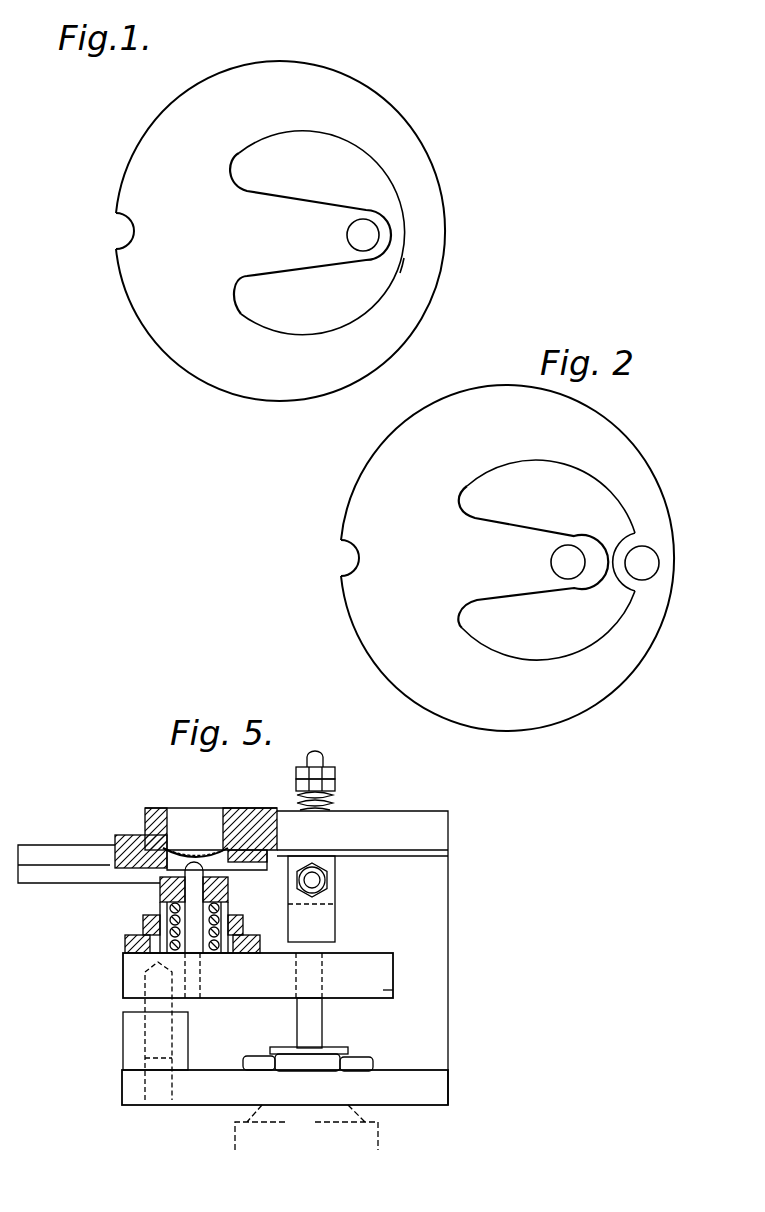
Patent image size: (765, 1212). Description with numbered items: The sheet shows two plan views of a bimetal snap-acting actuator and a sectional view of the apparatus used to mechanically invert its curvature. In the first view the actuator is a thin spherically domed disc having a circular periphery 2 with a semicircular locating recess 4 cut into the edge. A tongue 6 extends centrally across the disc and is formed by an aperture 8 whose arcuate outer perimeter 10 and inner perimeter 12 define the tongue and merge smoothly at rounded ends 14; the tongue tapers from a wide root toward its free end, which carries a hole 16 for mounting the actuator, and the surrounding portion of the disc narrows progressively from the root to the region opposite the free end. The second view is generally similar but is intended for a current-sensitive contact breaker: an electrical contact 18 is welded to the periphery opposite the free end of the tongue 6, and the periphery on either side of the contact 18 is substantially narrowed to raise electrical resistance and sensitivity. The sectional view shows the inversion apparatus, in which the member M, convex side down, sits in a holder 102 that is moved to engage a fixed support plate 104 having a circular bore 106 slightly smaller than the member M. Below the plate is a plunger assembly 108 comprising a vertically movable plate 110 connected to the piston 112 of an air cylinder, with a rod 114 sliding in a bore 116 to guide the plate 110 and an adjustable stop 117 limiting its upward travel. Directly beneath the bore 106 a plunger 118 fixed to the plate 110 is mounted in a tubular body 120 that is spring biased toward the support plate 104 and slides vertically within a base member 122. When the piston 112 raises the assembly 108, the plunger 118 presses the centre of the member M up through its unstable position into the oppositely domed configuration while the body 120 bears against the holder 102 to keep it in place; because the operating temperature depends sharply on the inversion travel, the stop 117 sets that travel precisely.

In FIG. 1, the circular periphery 2 is at (430, 310).
In FIG. 2, the circular periphery 2 is at (370, 457).
In FIG. 1, the locating recess 4 is at (117, 224).
In FIG. 2, the locating recess 4 is at (343, 548).
In FIG. 1, the tongue 6 is at (267, 203).
In FIG. 2, the tongue 6 is at (480, 548).
In FIG. 1, the aperture 8 is at (382, 173).
In FIG. 2, the aperture 8 is at (603, 500).
In FIG. 1, the arcuate outer perimeter 10 is at (400, 273).
In FIG. 2, the arcuate outer perimeter 10 is at (600, 473).
In FIG. 1, the inner perimeter 12 is at (325, 203).
In FIG. 2, the inner perimeter 12 is at (533, 523).
In FIG. 1, the rounded ends 14 is at (232, 172).
In FIG. 2, the rounded ends 14 is at (467, 492).
In FIG. 1, the hole 16 is at (370, 240).
In FIG. 2, the hole 16 is at (570, 572).
In FIG. 2, the electrical contact 18 is at (637, 572).
In FIG. 5, the holder 102 is at (125, 833).
In FIG. 5, the support plate 104 is at (353, 822).
In FIG. 5, the circular bore 106 is at (202, 820).
In FIG. 5, the plunger assembly 108 is at (398, 985).
In FIG. 5, the plate 110 is at (383, 990).
In FIG. 5, the piston 112 is at (297, 1019).
In FIG. 5, the rod 114 is at (153, 1001).
In FIG. 5, the bore 116 is at (137, 1037).
In FIG. 5, the adjustable stop 117 is at (323, 923).
In FIG. 5, the plunger 118 is at (160, 881).
In FIG. 5, the tubular body 120 is at (188, 870).
In FIG. 5, the base member 122 is at (123, 938).
In FIG. 5, the member M is at (176, 840).